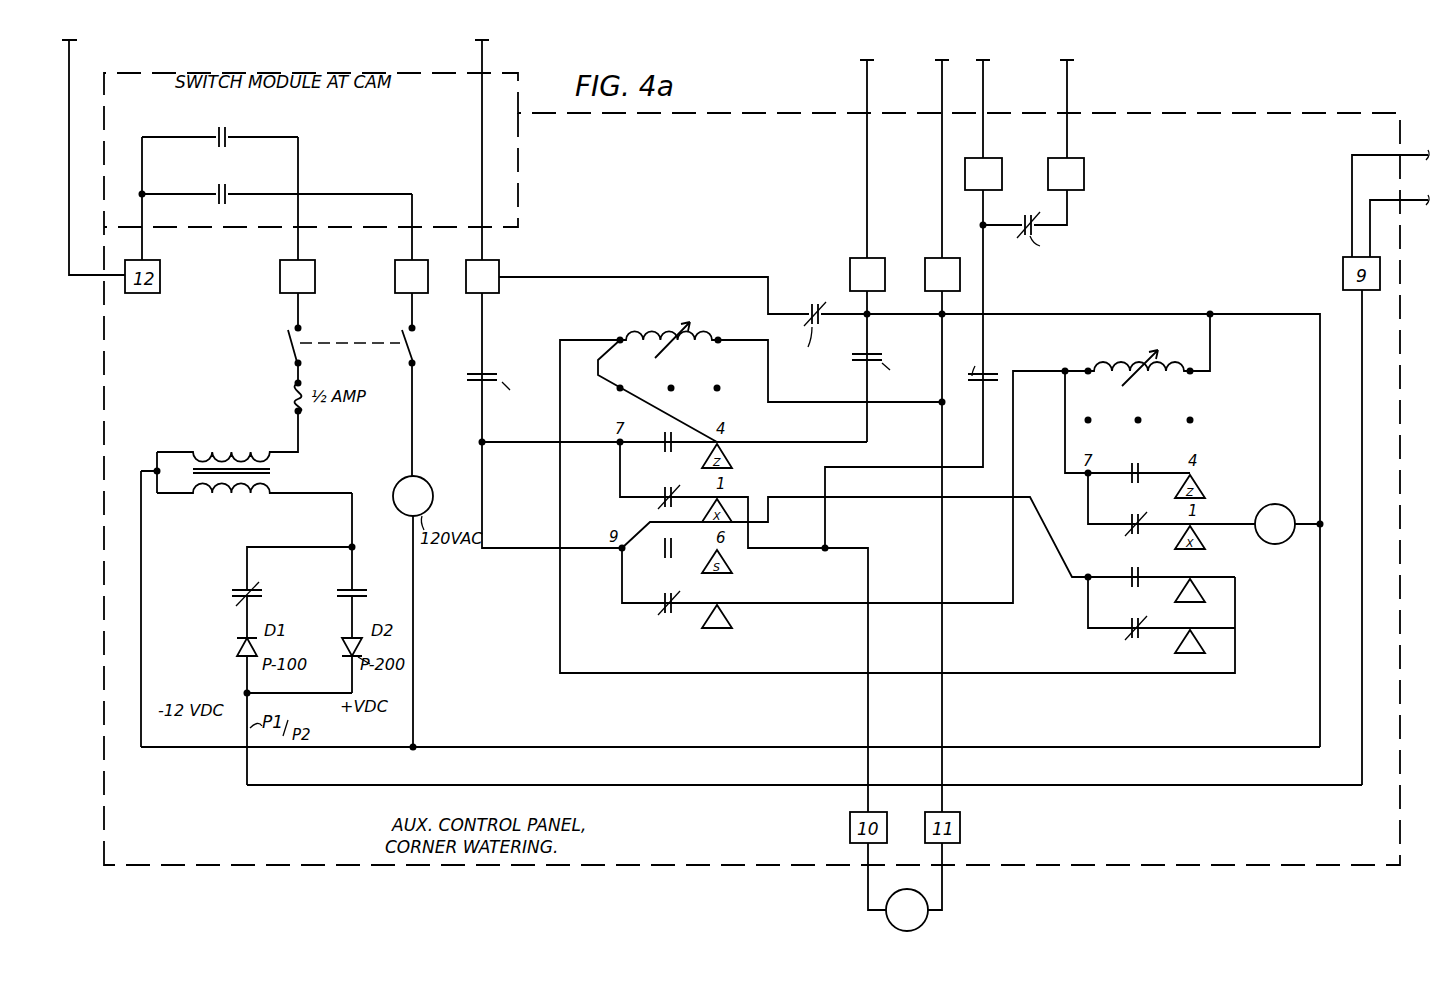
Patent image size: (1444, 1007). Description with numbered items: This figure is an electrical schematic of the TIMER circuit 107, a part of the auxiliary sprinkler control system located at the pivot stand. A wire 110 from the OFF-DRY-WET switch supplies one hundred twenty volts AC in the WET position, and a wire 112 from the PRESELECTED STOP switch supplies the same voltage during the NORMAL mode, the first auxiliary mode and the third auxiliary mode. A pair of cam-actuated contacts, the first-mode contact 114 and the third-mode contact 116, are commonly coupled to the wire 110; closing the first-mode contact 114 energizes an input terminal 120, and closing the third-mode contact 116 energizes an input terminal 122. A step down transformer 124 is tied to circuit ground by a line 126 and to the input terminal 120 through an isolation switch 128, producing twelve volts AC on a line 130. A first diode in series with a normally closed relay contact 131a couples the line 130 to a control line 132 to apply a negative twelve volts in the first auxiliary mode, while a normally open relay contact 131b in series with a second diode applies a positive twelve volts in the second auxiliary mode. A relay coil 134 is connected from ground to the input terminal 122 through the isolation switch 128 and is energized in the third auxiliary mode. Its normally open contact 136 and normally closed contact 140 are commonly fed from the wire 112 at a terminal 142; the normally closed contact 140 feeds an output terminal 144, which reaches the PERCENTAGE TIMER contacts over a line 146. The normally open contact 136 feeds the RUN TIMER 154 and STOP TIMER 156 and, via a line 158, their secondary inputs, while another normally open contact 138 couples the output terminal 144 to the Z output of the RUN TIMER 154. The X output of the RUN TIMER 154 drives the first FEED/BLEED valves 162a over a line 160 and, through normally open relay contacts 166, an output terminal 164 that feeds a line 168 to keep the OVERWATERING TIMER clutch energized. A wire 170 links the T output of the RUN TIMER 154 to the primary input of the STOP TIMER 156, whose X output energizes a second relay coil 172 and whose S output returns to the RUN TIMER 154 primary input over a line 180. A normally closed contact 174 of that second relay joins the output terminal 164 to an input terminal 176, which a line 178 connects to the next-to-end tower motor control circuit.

The TIMER circuit 107 is at (104, 715).
The wire 110 is at (69, 165).
The wire 112 is at (482, 192).
The P1 contact 114 is at (226, 120).
The P3 contact 116 is at (220, 182).
The input terminal 120 is at (304, 263).
The input terminal 122 is at (419, 263).
The step down transformer 124 is at (156, 466).
The line 126 is at (141, 540).
The isolation switch 128 is at (407, 349).
The line 130 is at (311, 529).
The normally closed R6 contact 131a is at (231, 590).
The normally open R6 contact 131b is at (374, 606).
The P1/P2 line 132 is at (240, 727).
The R5 coil 134 is at (408, 478).
The normally open R5 contact 136 is at (490, 373).
The normally open R5 contact 138 is at (872, 358).
The normally closed R5 contact 140 is at (822, 324).
The terminal 142 is at (498, 262).
The output terminal 144 is at (886, 272).
The line 146 is at (866, 178).
The RUN TIMER 154 is at (768, 345).
The STOP TIMER 156 is at (1210, 335).
The line 158 is at (490, 430).
The line 160 is at (868, 660).
The first FEED/BLEED valves 162a is at (925, 916).
The output terminal 164 is at (985, 160).
The normally open R6 contacts 166 is at (989, 373).
The line 168 is at (985, 108).
The wire 170 is at (789, 603).
The R6 coil 172 is at (1281, 545).
The normally closed R6 contact 174 is at (1022, 237).
The input terminal 176 is at (1086, 175).
The line 178 is at (1070, 96).
The line 180 is at (1236, 616).